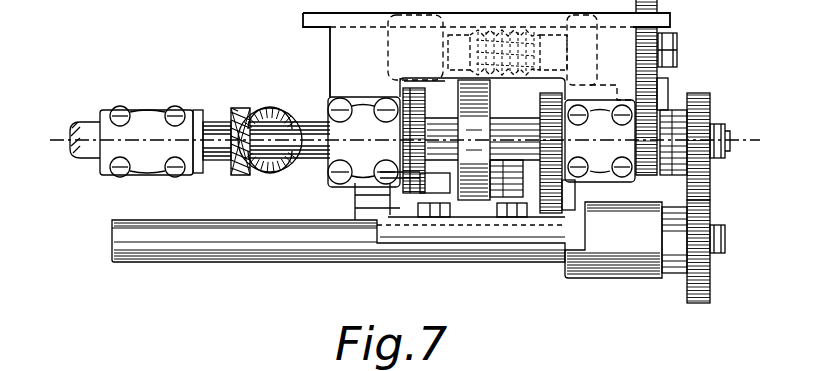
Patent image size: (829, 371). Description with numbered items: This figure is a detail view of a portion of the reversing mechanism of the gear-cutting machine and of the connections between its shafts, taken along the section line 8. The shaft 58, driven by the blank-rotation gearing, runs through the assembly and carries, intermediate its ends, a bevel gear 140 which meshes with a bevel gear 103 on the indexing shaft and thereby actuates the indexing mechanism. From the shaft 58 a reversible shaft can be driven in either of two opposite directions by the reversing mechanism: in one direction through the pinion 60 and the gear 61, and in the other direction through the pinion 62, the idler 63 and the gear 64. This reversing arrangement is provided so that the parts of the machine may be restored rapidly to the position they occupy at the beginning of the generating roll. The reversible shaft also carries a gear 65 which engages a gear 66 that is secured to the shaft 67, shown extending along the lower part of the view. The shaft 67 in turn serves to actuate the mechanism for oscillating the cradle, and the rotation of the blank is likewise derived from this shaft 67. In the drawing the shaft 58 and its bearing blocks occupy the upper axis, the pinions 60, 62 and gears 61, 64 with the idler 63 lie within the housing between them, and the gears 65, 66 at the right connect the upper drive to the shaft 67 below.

The section line 8- 8 is at (400, 141).
The bevel gear 140 is at (237, 114).
The bevel gear 103 is at (269, 112).
The shaft 58 is at (305, 132).
The pinion 60 is at (423, 117).
The gear 61 is at (357, 195).
The pinion 62 is at (538, 122).
The idler 63 is at (560, 218).
The gear 64 is at (550, 100).
The gear 65 is at (703, 94).
The gear 66 is at (700, 270).
The shaft 67 is at (328, 250).